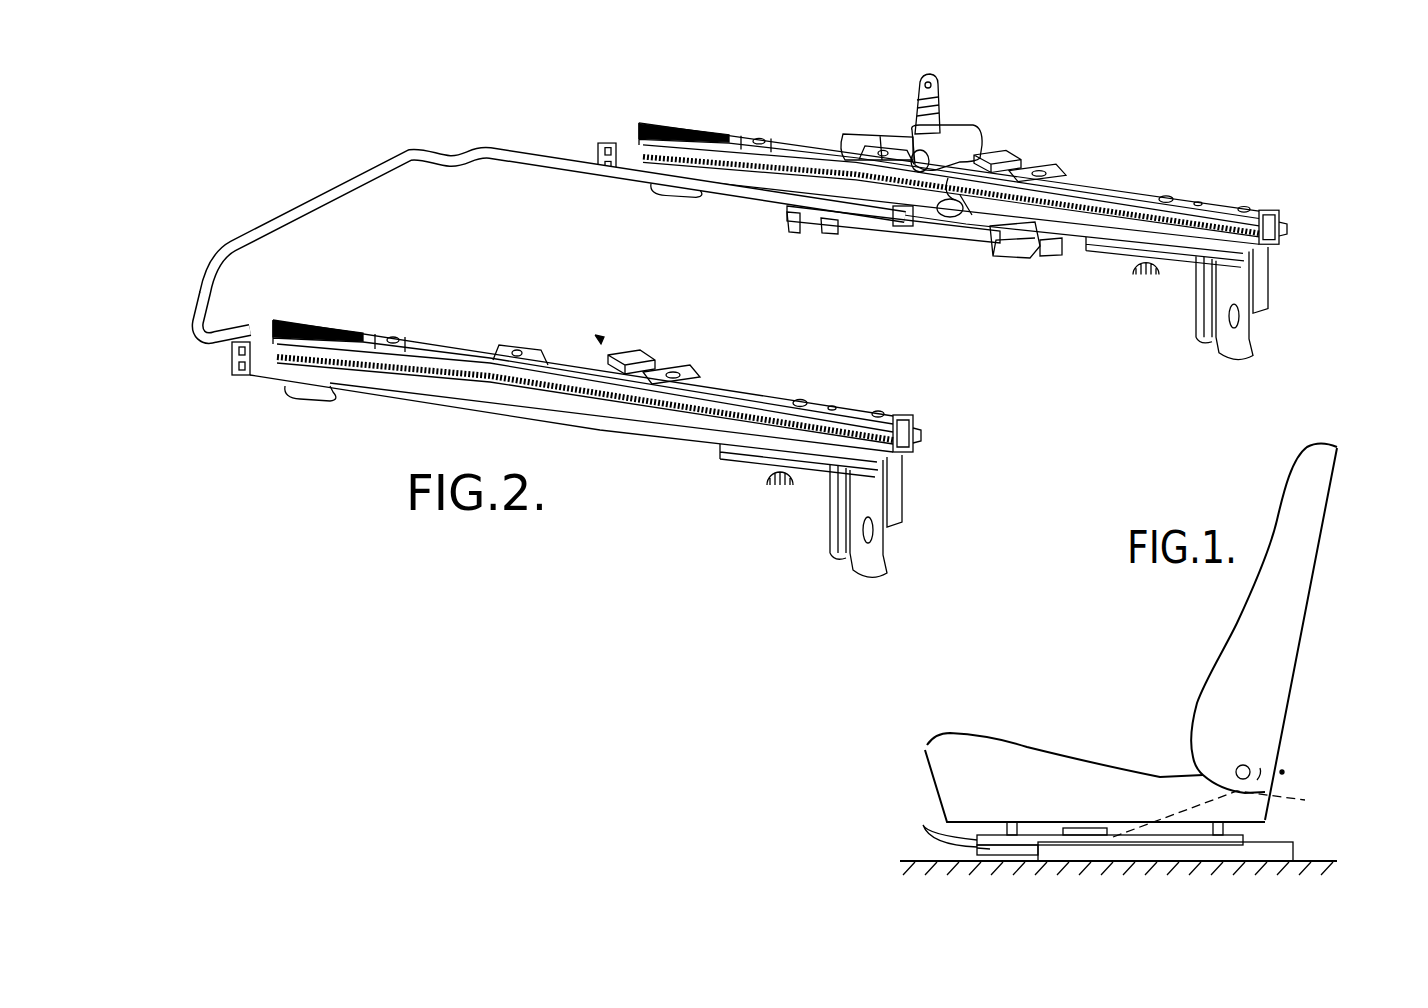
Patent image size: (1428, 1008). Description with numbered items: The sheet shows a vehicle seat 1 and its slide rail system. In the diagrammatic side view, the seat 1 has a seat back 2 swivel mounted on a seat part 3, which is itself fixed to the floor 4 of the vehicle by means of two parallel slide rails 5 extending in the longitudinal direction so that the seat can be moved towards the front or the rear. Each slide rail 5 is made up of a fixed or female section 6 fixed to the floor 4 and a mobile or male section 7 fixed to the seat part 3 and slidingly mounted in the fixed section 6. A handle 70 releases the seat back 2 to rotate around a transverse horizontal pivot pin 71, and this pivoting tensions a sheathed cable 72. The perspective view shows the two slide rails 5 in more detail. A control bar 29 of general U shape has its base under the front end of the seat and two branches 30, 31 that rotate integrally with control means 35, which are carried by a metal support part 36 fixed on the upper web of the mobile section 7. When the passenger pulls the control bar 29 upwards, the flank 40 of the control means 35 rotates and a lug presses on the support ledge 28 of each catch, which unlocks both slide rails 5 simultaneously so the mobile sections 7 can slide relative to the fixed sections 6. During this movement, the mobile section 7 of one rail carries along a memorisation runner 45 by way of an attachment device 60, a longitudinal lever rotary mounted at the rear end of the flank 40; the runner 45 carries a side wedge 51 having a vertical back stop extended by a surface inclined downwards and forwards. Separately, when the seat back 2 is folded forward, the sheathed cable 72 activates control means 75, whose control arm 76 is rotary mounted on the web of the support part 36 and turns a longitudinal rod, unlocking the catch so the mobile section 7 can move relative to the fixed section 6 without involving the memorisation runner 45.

In FIG. 1, the seat 1 is at (1158, 690).
In FIG. 1, the seat back 2 is at (1307, 522).
In FIG. 1, the seat part 3 is at (1045, 768).
In FIG. 1, the floor 4 is at (1318, 862).
In FIG. 2, the slide rail 5 is at (1196, 185).
In FIG. 1, the slide rail 5 is at (1315, 838).
In FIG. 2, the fixed section 6 is at (815, 437).
In FIG. 1, the fixed section 6 is at (1155, 848).
In FIG. 2, the mobile section 7 is at (920, 426).
In FIG. 1, the mobile section 7 is at (990, 849).
In FIG. 2, the support ledge 28 is at (663, 356).
In FIG. 2, the control bar 29 is at (308, 200).
In FIG. 1, the control bar 29 is at (925, 826).
In FIG. 2, the branch 30 is at (487, 158).
In FIG. 2, the branch 31 is at (232, 327).
In FIG. 2, the control means 35 is at (599, 338).
In FIG. 2, the support part 36 is at (548, 344).
In FIG. 2, the flank 40 is at (926, 219).
In FIG. 2, the memorisation runner 45 is at (1060, 266).
In FIG. 2, the side wedge 51 is at (1020, 242).
In FIG. 2, the attachment device 60 is at (969, 220).
In FIG. 1, the handle 70 is at (1282, 772).
In FIG. 1, the pivot pin 71 is at (1237, 770).
In FIG. 1, the sheathed cable 72 is at (1226, 810).
In FIG. 2, the control means 75 is at (971, 110).
In FIG. 2, the control arm 76 is at (915, 104).